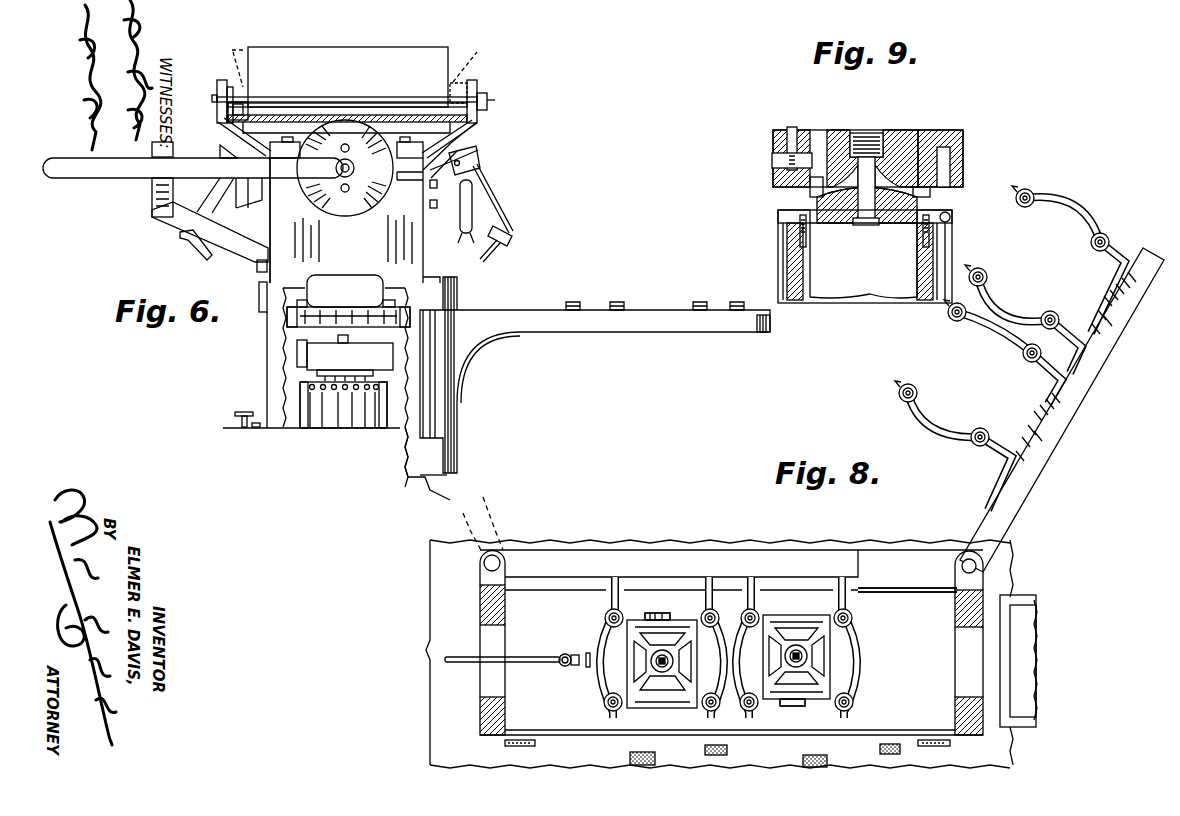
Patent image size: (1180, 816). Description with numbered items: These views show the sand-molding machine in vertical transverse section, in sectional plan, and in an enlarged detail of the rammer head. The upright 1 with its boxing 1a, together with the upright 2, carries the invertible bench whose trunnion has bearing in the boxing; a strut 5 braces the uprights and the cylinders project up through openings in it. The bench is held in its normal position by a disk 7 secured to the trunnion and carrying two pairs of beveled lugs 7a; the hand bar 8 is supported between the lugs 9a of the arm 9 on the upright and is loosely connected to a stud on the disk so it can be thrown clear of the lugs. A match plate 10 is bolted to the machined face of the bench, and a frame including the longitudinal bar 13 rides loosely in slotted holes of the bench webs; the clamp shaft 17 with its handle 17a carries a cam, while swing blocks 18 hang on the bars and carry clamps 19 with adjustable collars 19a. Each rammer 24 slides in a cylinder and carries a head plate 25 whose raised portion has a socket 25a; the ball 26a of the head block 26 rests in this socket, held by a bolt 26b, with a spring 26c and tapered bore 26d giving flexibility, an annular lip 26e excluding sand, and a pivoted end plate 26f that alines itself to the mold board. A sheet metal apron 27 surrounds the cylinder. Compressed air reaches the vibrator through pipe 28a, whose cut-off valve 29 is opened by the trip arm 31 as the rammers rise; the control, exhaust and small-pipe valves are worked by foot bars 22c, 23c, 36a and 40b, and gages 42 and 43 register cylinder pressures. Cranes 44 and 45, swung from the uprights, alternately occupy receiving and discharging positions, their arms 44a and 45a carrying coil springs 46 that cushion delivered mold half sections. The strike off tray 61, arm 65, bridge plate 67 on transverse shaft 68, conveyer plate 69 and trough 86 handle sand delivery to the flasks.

In FIG. 6, the upright 1 is at (420, 258).
In FIG. 8, the upright 1 is at (957, 610).
In FIG. 6, the boxing 1a is at (310, 200).
In FIG. 6, the upright 2 is at (393, 413).
In FIG. 8, the upright 2 is at (505, 604).
In FIG. 8, the strut 5 is at (923, 598).
In FIG. 6, the disk 7 is at (348, 212).
In FIG. 6, the beveled lugs 7a is at (392, 172).
In FIG. 6, the hand bar 8 is at (115, 174).
In FIG. 6, the arm 9 is at (172, 218).
In FIG. 6, the lugs 9a is at (152, 186).
In FIG. 6, the match plate 10 is at (347, 126).
In FIG. 6, the longitudinal bar 13 is at (480, 156).
In FIG. 6, the clamp shaft 17 is at (450, 192).
In FIG. 6, the handle 17a is at (462, 236).
In FIG. 6, the swing block 18 is at (480, 168).
In FIG. 6, the clamp 19 is at (508, 250).
In FIG. 6, the collar 19a is at (510, 228).
In FIG. 6, the foot bar 22c is at (233, 415).
In FIG. 8, the foot bar 22c is at (810, 755).
In FIG. 8, the foot bar 23c is at (649, 750).
In FIG. 9, the rammer 24 is at (812, 293).
In FIG. 9, the head plate 25 is at (903, 224).
In FIG. 9, the socket 25a is at (842, 226).
In FIG. 6, the head block 26 is at (345, 358).
In FIG. 9, the head block 26 is at (963, 164).
In FIG. 8, the head block 26 is at (628, 685).
In FIG. 9, the ball 26a is at (888, 135).
In FIG. 9, the bolt 26b is at (866, 190).
In FIG. 8, the bolt 26b is at (655, 655).
In FIG. 9, the spring 26c is at (858, 132).
In FIG. 9, the tapered bore 26d is at (810, 185).
In FIG. 9, the annular lip 26e is at (930, 195).
In FIG. 9, the end plate 26f is at (791, 127).
In FIG. 8, the end plate 26f is at (640, 625).
In FIG. 6, the apron 27 is at (343, 405).
In FIG. 9, the apron 27 is at (952, 239).
In FIG. 8, the pipe 28a is at (491, 662).
In FIG. 8, the cut-off valve 29 is at (562, 665).
In FIG. 6, the trip arm 31 is at (468, 355).
In FIG. 8, the foot bar 36a is at (727, 750).
In FIG. 6, the foot bar 40b is at (252, 427).
In FIG. 8, the foot bar 40b is at (885, 757).
In FIG. 6, the gage 42 is at (259, 290).
In FIG. 8, the gage 42 is at (950, 745).
In FIG. 8, the gage 43 is at (538, 744).
In FIG. 6, the crane 44 is at (645, 337).
In FIG. 8, the crane 44 is at (1047, 466).
In FIG. 8, the crane arm 44a is at (1100, 257).
In FIG. 8, the crane 45 is at (650, 557).
In FIG. 6, the crane arm 45a is at (333, 318).
In FIG. 6, the coil spring 46 is at (292, 306).
In FIG. 8, the coil spring 46 is at (1027, 208).
In FIG. 6, the strike off tray 61 is at (478, 52).
In FIG. 6, the arm 65 is at (470, 138).
In FIG. 6, the bridge plate 67 is at (393, 58).
In FIG. 6, the transverse shaft 68 is at (490, 98).
In FIG. 6, the conveyer plate 69 is at (258, 112).
In FIG. 8, the trough 86 is at (1026, 662).